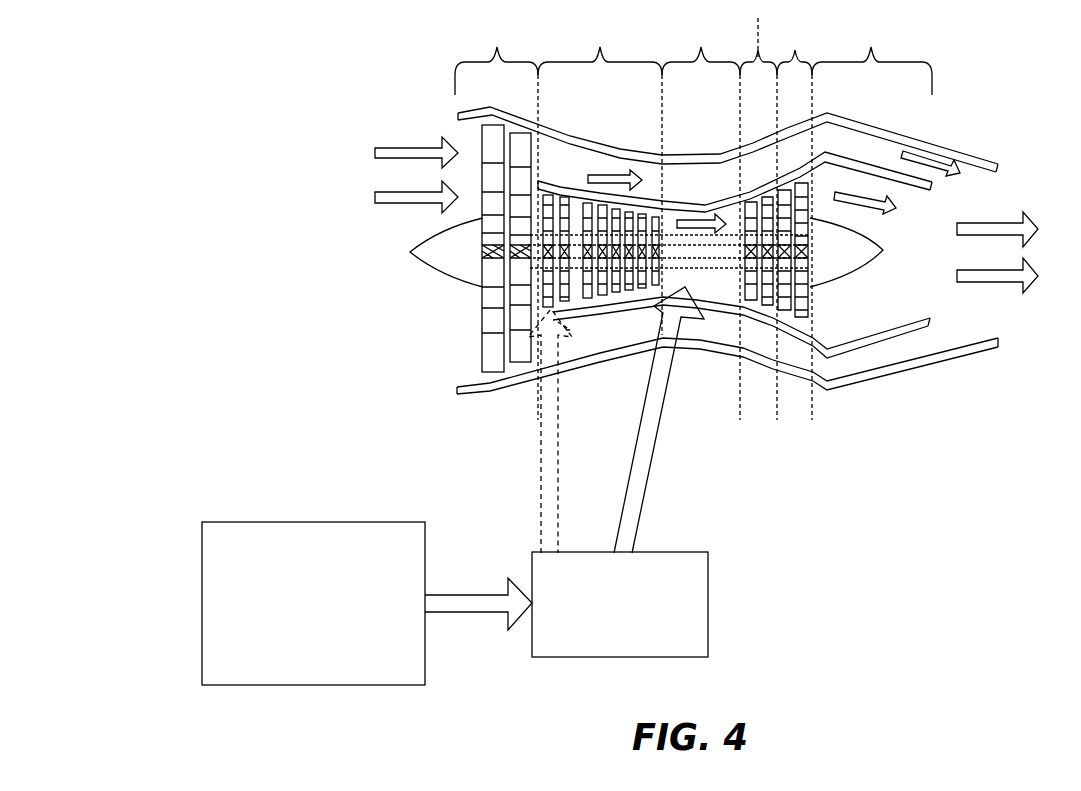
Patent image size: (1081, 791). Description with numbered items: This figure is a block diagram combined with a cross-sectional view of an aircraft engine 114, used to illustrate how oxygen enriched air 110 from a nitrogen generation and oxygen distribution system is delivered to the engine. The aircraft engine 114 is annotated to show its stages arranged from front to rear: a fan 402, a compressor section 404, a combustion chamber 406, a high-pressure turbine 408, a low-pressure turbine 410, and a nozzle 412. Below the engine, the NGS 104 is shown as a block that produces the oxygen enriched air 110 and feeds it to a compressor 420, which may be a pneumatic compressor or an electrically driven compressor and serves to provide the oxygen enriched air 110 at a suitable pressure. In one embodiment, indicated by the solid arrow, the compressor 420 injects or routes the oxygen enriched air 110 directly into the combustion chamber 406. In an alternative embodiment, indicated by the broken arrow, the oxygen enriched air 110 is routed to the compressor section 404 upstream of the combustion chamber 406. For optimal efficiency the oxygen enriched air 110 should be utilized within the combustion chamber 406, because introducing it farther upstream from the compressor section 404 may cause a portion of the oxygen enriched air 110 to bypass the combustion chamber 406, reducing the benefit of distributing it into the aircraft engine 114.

The aircraft engine 114 is at (390, 89).
The fan 402 is at (496, 220).
The compressor section 404 is at (600, 178).
The combustion chamber 406 is at (701, 220).
The high-pressure turbine 408 is at (758, 210).
The low-pressure turbine 410 is at (794, 220).
The nozzle 412 is at (872, 57).
The oxygen enriched air 110 is at (557, 470).
The NGS 104 is at (218, 556).
The compressor 420 is at (698, 645).